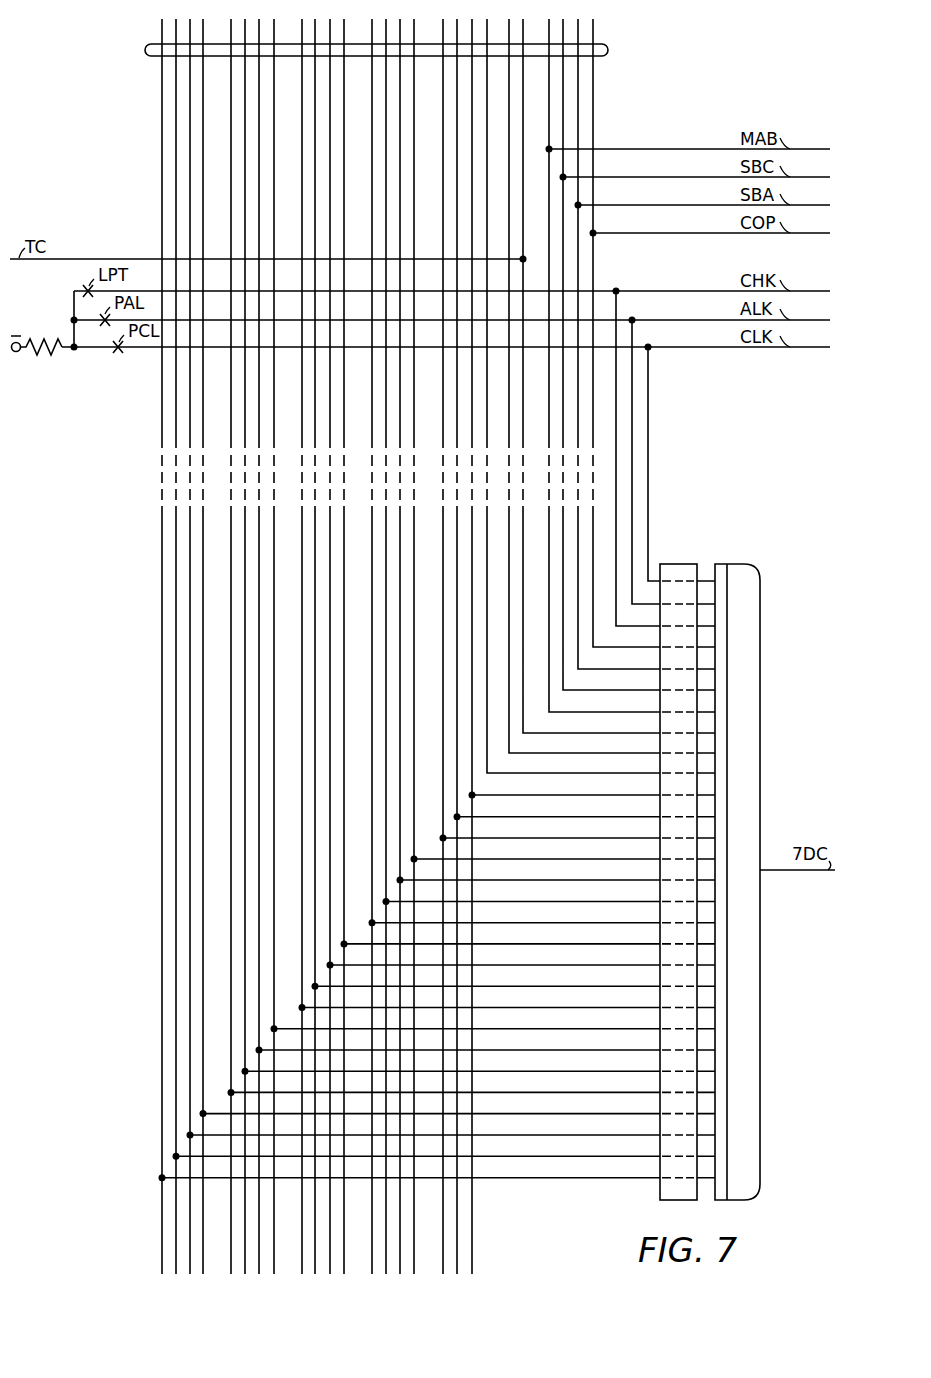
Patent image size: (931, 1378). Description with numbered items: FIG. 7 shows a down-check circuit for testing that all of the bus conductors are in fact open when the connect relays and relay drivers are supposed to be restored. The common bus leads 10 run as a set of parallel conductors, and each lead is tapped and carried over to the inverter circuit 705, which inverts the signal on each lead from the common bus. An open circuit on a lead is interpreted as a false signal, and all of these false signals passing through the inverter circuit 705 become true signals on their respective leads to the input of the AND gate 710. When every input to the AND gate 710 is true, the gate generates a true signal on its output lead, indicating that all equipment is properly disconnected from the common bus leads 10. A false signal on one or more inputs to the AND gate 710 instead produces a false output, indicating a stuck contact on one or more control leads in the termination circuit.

The common bus leads 10 is at (608, 52).
The inverter circuit 705 is at (673, 570).
The AND gate 710 is at (746, 574).